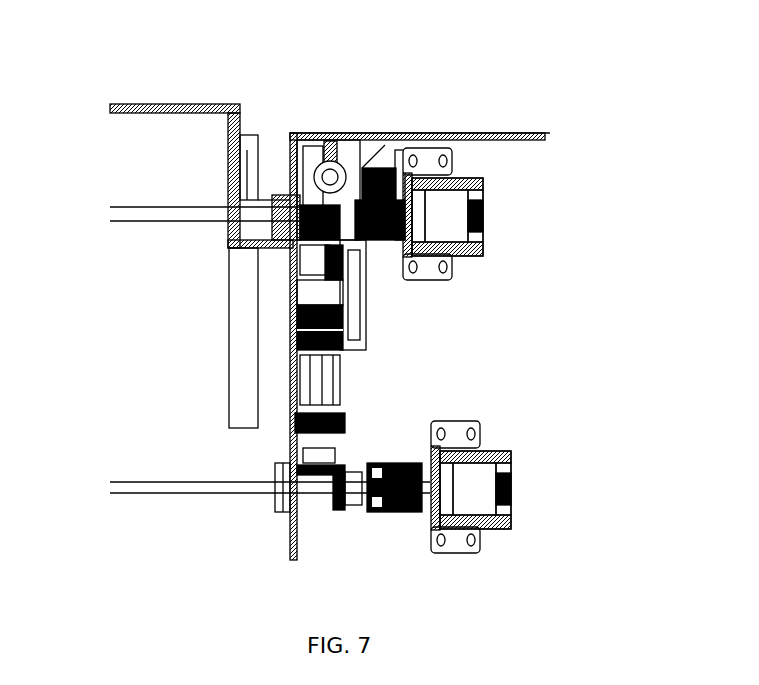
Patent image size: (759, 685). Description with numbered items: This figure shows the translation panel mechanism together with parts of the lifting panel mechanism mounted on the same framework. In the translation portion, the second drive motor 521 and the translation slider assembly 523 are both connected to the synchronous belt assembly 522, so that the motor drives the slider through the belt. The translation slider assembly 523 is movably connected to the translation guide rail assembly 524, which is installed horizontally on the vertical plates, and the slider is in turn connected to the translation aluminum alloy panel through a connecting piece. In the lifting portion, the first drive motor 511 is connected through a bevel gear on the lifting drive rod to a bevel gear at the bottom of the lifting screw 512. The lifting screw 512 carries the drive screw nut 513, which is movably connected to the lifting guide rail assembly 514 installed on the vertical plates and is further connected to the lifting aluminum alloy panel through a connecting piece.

The first drive motor 511 is at (500, 520).
The lifting screw 512 is at (332, 437).
The drive screw nut 513 is at (345, 357).
The lifting guide rail assembly 514 is at (292, 307).
The second drive motor 521 is at (485, 212).
The synchronous belt assembly 522 is at (306, 135).
The translation slider assembly 523 is at (372, 152).
The translation guide rail assembly 524 is at (345, 138).